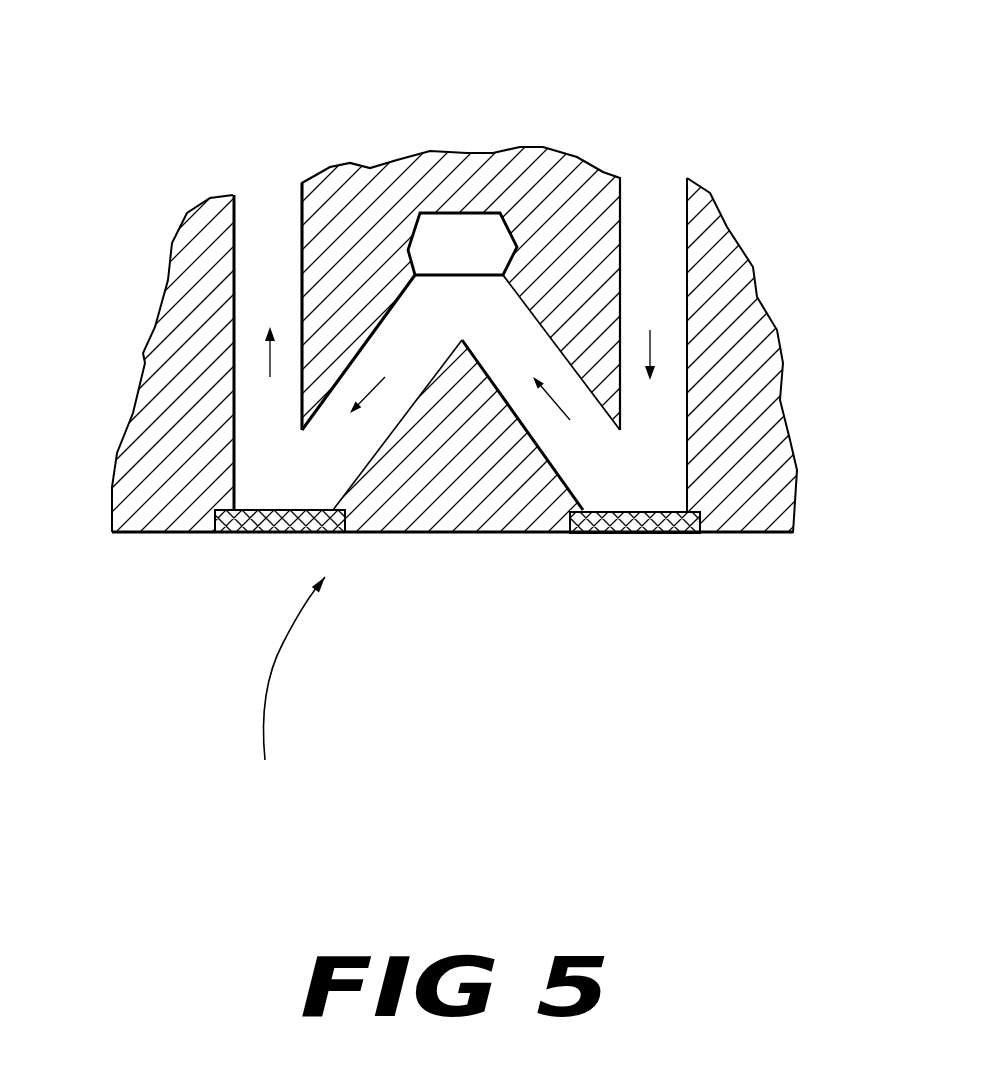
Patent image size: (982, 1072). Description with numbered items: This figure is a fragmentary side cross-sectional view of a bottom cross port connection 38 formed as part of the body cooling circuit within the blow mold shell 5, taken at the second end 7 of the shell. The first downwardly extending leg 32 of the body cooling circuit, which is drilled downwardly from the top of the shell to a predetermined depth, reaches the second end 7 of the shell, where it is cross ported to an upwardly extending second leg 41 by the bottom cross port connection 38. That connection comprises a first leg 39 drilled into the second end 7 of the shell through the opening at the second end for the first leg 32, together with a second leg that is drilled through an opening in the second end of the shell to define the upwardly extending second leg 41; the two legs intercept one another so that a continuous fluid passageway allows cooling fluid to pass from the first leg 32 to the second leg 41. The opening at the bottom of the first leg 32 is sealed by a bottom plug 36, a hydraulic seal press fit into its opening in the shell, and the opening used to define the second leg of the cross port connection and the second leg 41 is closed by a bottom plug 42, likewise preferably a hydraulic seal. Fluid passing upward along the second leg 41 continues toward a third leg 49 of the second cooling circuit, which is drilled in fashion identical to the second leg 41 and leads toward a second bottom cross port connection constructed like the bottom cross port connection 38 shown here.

The blow mold shell 5 is at (760, 363).
The second end 7 is at (135, 533).
The first downwardly extending leg 32 is at (674, 195).
The bottom plug 36 is at (673, 535).
The bottom cross port connection 38 is at (281, 691).
The first leg of the bottom cross port connection 39 is at (522, 340).
The upwardly extending second leg 41 is at (256, 198).
The bottom plug 42 is at (243, 533).
The third leg 49 is at (397, 343).